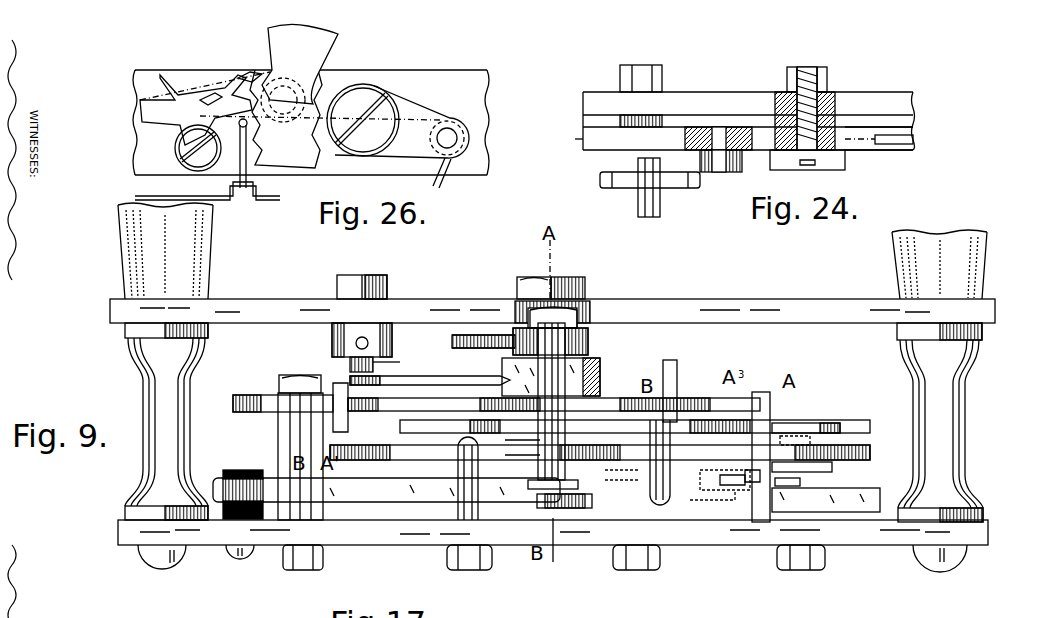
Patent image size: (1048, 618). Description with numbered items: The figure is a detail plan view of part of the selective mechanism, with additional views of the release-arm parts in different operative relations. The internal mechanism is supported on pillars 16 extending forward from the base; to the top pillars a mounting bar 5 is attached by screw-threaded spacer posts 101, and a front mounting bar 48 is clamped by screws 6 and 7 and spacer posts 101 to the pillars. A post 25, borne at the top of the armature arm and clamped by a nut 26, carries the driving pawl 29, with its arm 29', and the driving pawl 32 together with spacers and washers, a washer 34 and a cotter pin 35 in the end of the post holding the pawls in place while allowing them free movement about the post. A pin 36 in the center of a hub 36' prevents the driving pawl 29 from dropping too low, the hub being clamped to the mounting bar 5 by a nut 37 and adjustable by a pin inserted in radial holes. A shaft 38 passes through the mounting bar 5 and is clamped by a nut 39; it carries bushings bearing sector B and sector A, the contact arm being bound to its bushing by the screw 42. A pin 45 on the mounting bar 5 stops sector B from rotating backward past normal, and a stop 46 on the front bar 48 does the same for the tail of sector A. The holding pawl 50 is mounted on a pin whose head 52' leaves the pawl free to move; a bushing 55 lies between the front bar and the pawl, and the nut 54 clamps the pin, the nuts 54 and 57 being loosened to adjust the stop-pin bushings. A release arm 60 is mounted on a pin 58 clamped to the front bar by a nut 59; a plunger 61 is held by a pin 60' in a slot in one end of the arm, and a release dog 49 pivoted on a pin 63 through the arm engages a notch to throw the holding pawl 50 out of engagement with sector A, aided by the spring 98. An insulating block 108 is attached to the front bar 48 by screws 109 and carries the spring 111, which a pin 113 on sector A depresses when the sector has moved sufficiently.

In FIG. 9, the mounting bar 5 is at (997, 312).
In FIG. 9, the screw 6 is at (960, 568).
In FIG. 9, the screw 7 is at (150, 560).
In FIG. 9, the pillar 16 is at (998, 253).
In FIG. 9, the post 25 is at (540, 482).
In FIG. 9, the nut 26 is at (530, 310).
In FIG. 9, the driving pawl 29 is at (283, 374).
In FIG. 9, the arm of driving pawl 29' is at (430, 368).
In FIG. 9, the driving pawl 32 is at (735, 420).
In FIG. 9, the washer 34 is at (528, 481).
In FIG. 9, the cotter pin 35 is at (537, 500).
In FIG. 9, the pin 36 is at (396, 350).
In FIG. 9, the hub 36' is at (321, 323).
In FIG. 9, the nut 37 is at (340, 296).
In FIG. 9, the shaft 38 is at (560, 276).
In FIG. 9, the nut 39 is at (527, 276).
In FIG. 9, the screw 42 is at (600, 372).
In FIG. 9, the pin 45 is at (680, 392).
In FIG. 9, the stop 46 is at (462, 520).
In FIG. 26, the front mounting bar 48 is at (330, 163).
In FIG. 24, the front mounting bar 48 is at (905, 88).
In FIG. 9, the front mounting bar 48 is at (990, 530).
In FIG. 26, the release dog 49 is at (294, 96).
In FIG. 24, the release dog 49 is at (648, 217).
In FIG. 9, the release dog 49 is at (800, 490).
In FIG. 26, the holding pawl 50 is at (168, 76).
In FIG. 24, the holding pawl 50 is at (606, 186).
In FIG. 9, the head 52' is at (827, 420).
In FIG. 9, the nut 54 is at (812, 572).
In FIG. 9, the bushing 55 is at (840, 480).
In FIG. 9, the nut 57 is at (300, 571).
In FIG. 26, the pin 58 is at (363, 120).
In FIG. 24, the pin 58 is at (846, 165).
In FIG. 24, the nut 59 is at (830, 80).
In FIG. 9, the nut 59 is at (640, 572).
In FIG. 26, the release arm 60 is at (402, 119).
In FIG. 24, the release arm 60 is at (568, 145).
In FIG. 9, the release arm 60 is at (725, 527).
In FIG. 26, the pin 60' is at (473, 138).
In FIG. 24, the pin 60' is at (896, 148).
In FIG. 26, the plunger 61 is at (440, 180).
In FIG. 26, the pin 63 is at (176, 148).
In FIG. 24, the pin 63 is at (730, 172).
In FIG. 26, the spring 98 is at (235, 200).
In FIG. 9, the spacer post 101 is at (142, 385).
In FIG. 9, the insulating block 108 is at (235, 520).
In FIG. 9, the screw 109 is at (245, 558).
In FIG. 9, the spring 111 is at (380, 505).
In FIG. 9, the pin 113 is at (660, 505).